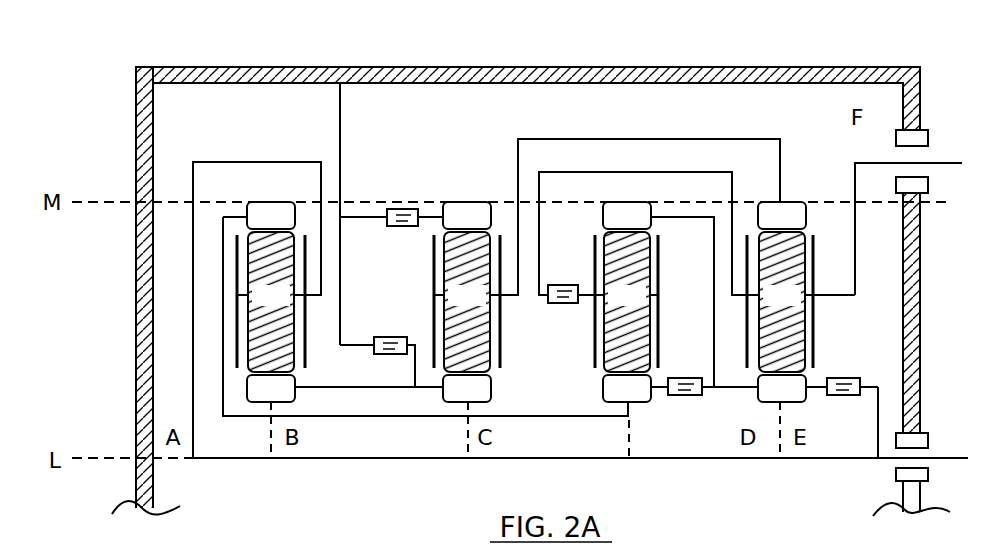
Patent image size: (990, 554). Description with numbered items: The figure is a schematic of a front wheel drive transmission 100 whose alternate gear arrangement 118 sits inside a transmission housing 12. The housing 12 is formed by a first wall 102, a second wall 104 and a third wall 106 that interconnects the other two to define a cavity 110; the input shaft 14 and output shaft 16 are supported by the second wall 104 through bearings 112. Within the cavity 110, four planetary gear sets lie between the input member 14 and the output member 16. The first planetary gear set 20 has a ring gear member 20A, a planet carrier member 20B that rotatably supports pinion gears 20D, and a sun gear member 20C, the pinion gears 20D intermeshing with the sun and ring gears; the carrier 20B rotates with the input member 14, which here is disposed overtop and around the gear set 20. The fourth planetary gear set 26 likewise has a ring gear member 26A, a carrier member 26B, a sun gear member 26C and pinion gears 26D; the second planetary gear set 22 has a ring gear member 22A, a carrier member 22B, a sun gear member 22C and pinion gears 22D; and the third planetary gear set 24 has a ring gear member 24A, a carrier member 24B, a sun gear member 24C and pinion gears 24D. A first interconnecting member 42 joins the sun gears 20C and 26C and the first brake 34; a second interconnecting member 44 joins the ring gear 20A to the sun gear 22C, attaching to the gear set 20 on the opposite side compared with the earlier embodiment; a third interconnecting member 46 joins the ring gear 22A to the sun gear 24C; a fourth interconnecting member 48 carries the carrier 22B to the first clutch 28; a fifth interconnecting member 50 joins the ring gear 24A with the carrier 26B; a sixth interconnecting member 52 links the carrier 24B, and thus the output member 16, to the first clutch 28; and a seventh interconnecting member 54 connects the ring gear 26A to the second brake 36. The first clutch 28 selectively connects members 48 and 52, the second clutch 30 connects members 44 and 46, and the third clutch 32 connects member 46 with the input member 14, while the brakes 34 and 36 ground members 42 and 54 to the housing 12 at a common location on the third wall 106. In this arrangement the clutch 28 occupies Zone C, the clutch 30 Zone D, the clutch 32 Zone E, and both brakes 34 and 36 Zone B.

The transmission 100 is at (752, 43).
The transmission housing 12 is at (836, 61).
The third wall 106 is at (345, 67).
The first wall 102 is at (144, 300).
The cavity 110 is at (400, 83).
The gear arrangement 118 is at (604, 100).
The second wall 104 is at (921, 272).
The bearings 112 is at (923, 126).
The output shaft 16 is at (946, 163).
The input shaft 14 is at (947, 458).
The first planetary gear set 20 is at (265, 190).
The ring gear member 20A is at (253, 225).
The planet carrier member 20B is at (306, 354).
The sun gear member 20C is at (253, 398).
The pinion gears 20D is at (256, 304).
The fourth planetary gear set 26 is at (463, 190).
The ring gear member 26A is at (449, 225).
The planet carrier member 26B is at (503, 350).
The sun gear member 26C is at (449, 398).
The pinion gears 26D is at (452, 304).
The second planetary gear set 22 is at (627, 188).
The ring gear member 22A is at (609, 225).
The planet carrier member 22B is at (660, 262).
The sun gear member 22C is at (609, 398).
The pinion gears 22D is at (612, 304).
The third planetary gear set 24 is at (796, 190).
The ring gear member 24A is at (764, 225).
The planet carrier member 24B is at (820, 306).
The sun gear member 24C is at (764, 398).
The pinion gears 24D is at (767, 304).
The first clutch 28 is at (561, 285).
The second clutch 30 is at (688, 396).
The third clutch 32 is at (848, 378).
The first brake 34 is at (392, 337).
The second brake 36 is at (400, 227).
The first interconnecting member 42 is at (330, 389).
The second interconnecting member 44 is at (372, 417).
The third interconnecting member 46 is at (712, 318).
The fourth interconnecting member 48 is at (584, 303).
The fifth interconnecting member 50 is at (546, 139).
The sixth interconnecting member 52 is at (576, 172).
The seventh interconnecting member 54 is at (428, 231).